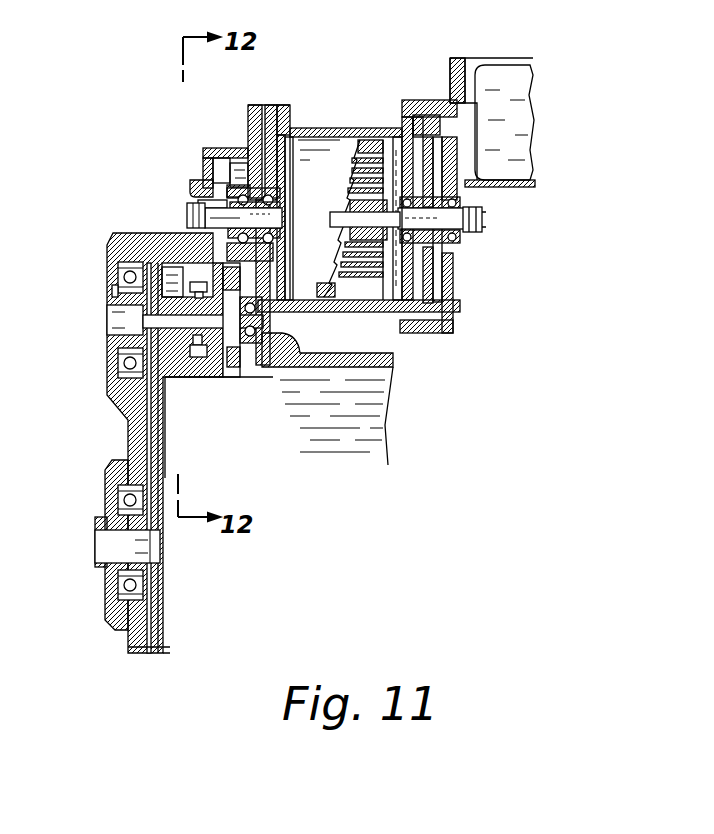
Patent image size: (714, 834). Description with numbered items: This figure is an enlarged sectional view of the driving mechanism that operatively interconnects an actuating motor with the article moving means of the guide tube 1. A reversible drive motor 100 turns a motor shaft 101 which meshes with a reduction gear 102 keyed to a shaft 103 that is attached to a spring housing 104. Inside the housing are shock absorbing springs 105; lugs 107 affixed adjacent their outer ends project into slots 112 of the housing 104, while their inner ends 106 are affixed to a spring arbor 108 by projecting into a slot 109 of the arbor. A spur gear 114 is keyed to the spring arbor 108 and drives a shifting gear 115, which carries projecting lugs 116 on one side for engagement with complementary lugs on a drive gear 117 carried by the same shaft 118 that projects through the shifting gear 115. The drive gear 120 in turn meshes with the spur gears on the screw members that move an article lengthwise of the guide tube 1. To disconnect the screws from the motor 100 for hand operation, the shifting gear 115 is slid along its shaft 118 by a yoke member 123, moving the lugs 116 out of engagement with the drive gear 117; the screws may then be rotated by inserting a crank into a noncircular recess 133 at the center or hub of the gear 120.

The guide tube 1 is at (392, 360).
The reversible drive motor 100 is at (496, 75).
The motor shaft 101 is at (428, 118).
The reduction gear 102 is at (430, 283).
The shaft 103 is at (443, 222).
The spring housing 104 is at (312, 157).
The shock absorbing springs 105 is at (356, 248).
The inner ends of springs 106 is at (366, 226).
The lugs 107 is at (363, 140).
The spring arbor 108 is at (188, 215).
The slot 109 is at (342, 215).
The slots 112 is at (380, 147).
The spur gear 114 is at (222, 170).
The shifting gear 115 is at (232, 363).
The projecting lugs 116 is at (178, 340).
The drive gear 117 is at (142, 330).
The shaft 118 is at (140, 320).
The drive gear 120 is at (150, 428).
The yoke member 123 is at (202, 355).
The noncircular recess 133 is at (105, 545).